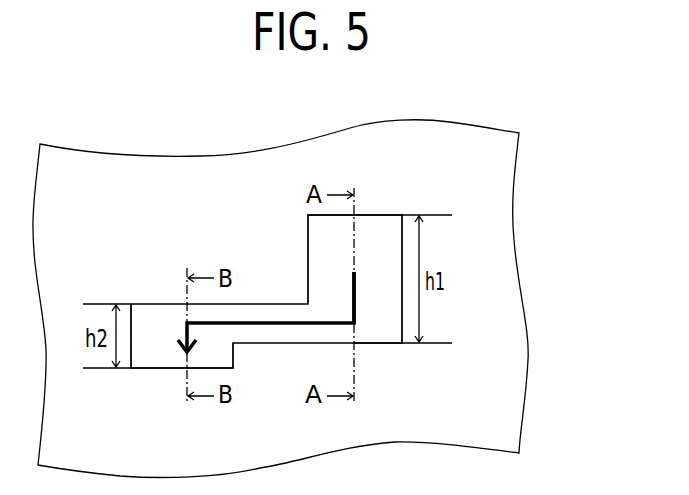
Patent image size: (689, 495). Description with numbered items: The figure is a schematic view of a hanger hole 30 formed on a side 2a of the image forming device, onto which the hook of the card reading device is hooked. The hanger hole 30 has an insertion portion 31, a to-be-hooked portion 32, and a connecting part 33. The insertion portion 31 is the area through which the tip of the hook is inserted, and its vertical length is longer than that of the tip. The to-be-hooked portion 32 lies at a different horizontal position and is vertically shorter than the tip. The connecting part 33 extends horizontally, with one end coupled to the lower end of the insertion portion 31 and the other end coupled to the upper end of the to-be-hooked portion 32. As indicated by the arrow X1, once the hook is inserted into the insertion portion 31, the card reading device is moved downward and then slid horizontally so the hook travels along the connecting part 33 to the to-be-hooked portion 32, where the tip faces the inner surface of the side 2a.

The side 2a is at (495, 191).
The hanger hole 30 is at (243, 246).
The insertion portion 31 is at (354, 242).
The to-be-hooked portion 32 is at (152, 342).
The connecting part 33 is at (271, 312).
The arrow X1 is at (355, 307).